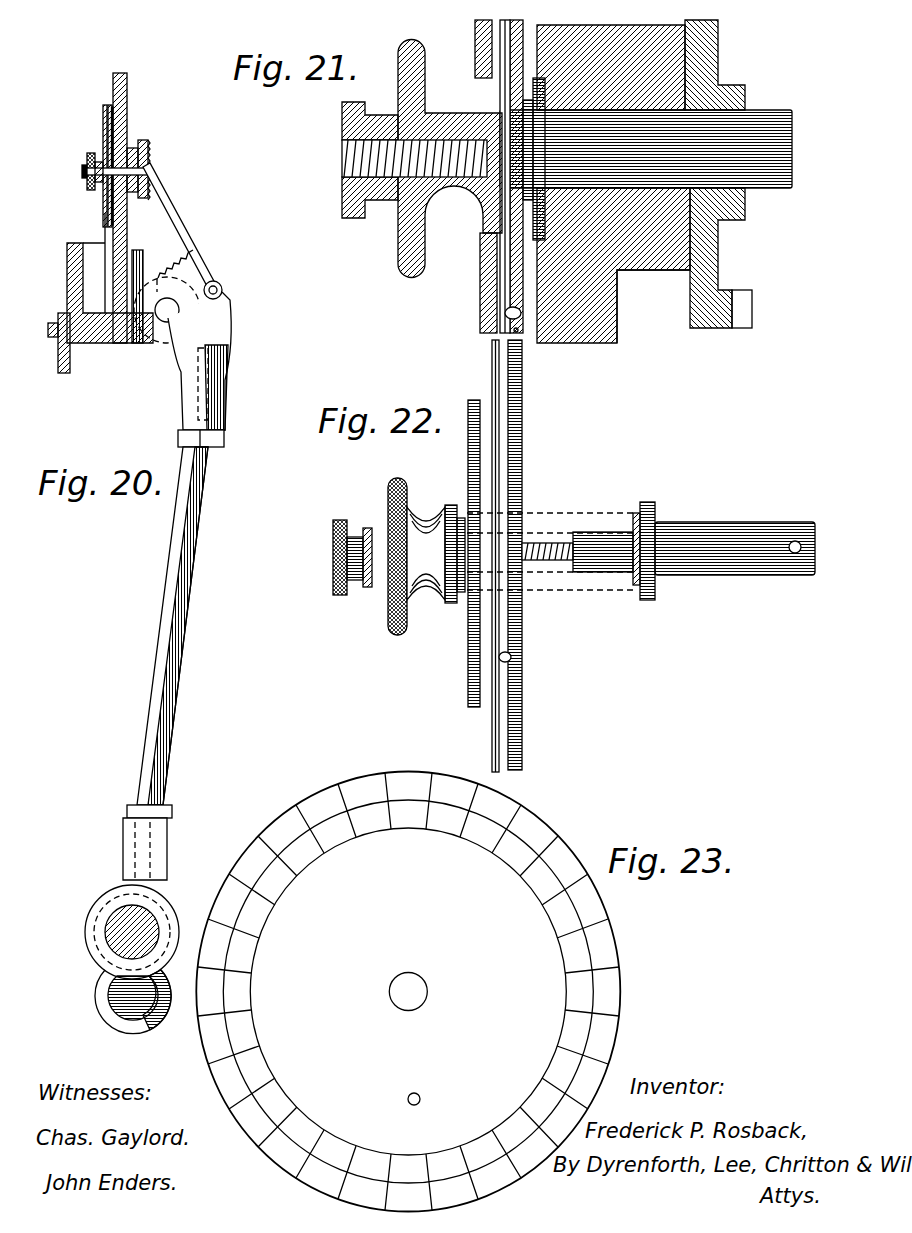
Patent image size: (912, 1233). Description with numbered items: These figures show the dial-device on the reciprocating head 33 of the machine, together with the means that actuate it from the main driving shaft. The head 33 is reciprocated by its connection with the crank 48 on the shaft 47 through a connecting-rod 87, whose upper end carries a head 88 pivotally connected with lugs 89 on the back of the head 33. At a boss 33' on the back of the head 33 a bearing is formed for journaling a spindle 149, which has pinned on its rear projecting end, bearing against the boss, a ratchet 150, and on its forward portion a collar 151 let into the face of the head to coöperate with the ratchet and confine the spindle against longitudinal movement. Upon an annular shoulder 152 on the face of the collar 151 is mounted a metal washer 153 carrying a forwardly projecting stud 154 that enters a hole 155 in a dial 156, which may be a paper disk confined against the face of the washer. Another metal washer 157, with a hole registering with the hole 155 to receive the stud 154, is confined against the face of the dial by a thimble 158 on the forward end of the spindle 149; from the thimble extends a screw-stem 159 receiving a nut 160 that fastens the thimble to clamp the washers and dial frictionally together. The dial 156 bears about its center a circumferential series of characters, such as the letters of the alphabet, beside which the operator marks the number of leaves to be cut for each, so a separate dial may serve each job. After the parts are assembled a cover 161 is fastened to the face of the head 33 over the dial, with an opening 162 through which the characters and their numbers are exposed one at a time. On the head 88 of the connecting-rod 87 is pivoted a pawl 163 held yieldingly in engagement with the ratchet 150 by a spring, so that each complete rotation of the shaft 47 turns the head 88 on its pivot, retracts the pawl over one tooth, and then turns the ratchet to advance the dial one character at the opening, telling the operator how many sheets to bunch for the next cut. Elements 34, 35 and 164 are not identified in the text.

In FIG. 20, the head 33 is at (140, 193).
In FIG. 21, the head 33 is at (613, 207).
In FIG. 21, the boss 33' is at (653, 296).
In FIG. 20, the base bracket 34 is at (67, 290).
In FIG. 20, the flange 35 is at (66, 368).
In FIG. 20, the shaft 47 is at (118, 994).
In FIG. 20, the crank 48 is at (114, 926).
In FIG. 20, the connecting-rod 87 is at (172, 641).
In FIG. 20, the head 88 is at (232, 352).
In FIG. 20, the lugs 89 is at (153, 342).
In FIG. 21, the spindle 149 is at (606, 150).
In FIG. 22, the spindle 149 is at (728, 522).
In FIG. 20, the ratchet 150 is at (147, 143).
In FIG. 21, the ratchet 150 is at (722, 283).
In FIG. 21, the collar 151 is at (544, 166).
In FIG. 22, the collar 151 is at (648, 502).
In FIG. 21, the annular shoulder 152 is at (522, 116).
In FIG. 22, the annular shoulder 152 is at (636, 571).
In FIG. 20, the metal washer 153 is at (113, 121).
In FIG. 21, the metal washer 153 is at (522, 338).
In FIG. 22, the metal washer 153 is at (520, 506).
In FIG. 21, the stud 154 is at (505, 313).
In FIG. 22, the stud 154 is at (499, 657).
In FIG. 21, the hole 155 is at (514, 331).
In FIG. 23, the hole 155 is at (418, 1094).
In FIG. 21, the dial 156 is at (505, 262).
In FIG. 22, the dial 156 is at (497, 476).
In FIG. 23, the dial 156 is at (408, 992).
In FIG. 21, the metal washer 157 is at (500, 285).
In FIG. 22, the metal washer 157 is at (472, 470).
In FIG. 20, the thimble 158 is at (95, 181).
In FIG. 21, the thimble 158 is at (410, 246).
In FIG. 22, the thimble 158 is at (388, 498).
In FIG. 21, the screw-stem 159 is at (348, 158).
In FIG. 20, the nut 160 is at (82, 172).
In FIG. 21, the nut 160 is at (356, 193).
In FIG. 22, the nut 160 is at (332, 540).
In FIG. 20, the cover 161 is at (103, 141).
In FIG. 21, the cover 161 is at (478, 52).
In FIG. 20, the opening 162 is at (108, 222).
In FIG. 20, the pawl 163 is at (181, 232).
In FIG. 20, the spring 164 is at (170, 270).